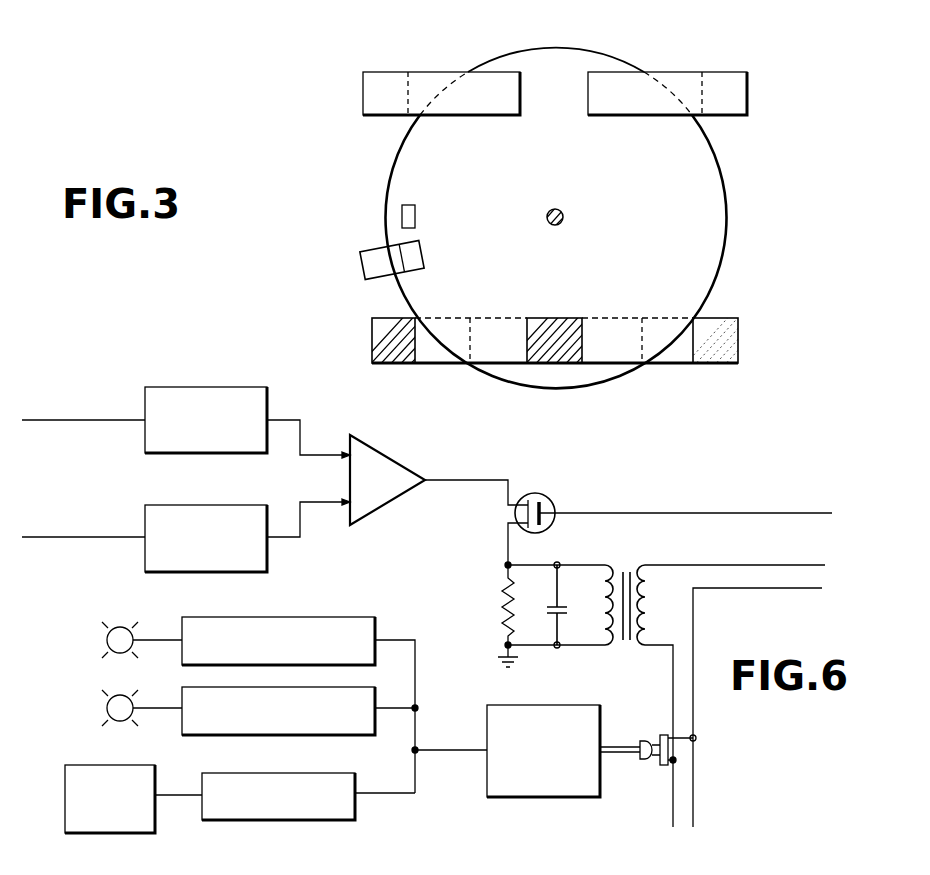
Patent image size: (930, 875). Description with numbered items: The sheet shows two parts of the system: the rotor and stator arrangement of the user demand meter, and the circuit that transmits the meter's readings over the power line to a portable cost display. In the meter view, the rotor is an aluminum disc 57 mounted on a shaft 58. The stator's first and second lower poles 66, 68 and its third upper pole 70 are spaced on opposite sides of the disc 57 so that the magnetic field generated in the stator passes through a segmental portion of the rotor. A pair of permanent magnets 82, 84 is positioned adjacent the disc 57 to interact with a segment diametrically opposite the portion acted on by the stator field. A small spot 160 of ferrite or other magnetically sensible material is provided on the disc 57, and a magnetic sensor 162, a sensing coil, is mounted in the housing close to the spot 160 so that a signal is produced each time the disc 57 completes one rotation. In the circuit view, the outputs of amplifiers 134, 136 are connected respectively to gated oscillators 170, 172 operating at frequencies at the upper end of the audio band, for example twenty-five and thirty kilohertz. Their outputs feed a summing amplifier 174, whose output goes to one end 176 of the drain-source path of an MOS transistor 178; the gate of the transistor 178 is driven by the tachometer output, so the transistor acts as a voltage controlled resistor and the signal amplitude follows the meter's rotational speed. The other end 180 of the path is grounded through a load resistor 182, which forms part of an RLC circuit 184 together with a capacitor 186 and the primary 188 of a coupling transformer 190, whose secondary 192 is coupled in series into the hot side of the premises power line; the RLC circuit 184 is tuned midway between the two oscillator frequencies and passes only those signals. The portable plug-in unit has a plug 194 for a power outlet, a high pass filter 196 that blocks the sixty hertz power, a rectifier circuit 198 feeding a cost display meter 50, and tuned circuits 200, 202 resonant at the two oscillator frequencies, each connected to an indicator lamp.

In FIG. 3, the aluminum disc 57 is at (531, 56).
In FIG. 3, the permanent magnet 82 is at (363, 74).
In FIG. 3, the permanent magnet 84 is at (748, 90).
In FIG. 3, the shaft 58 is at (548, 213).
In FIG. 3, the magnetically sensible spot 160 is at (405, 205).
In FIG. 3, the magnetic sensor 162 is at (362, 258).
In FIG. 3, the third upper pole 70 is at (552, 320).
In FIG. 3, the first lower pole 66 is at (493, 343).
In FIG. 3, the second lower pole 68 is at (615, 343).
In FIG. 6, the amplifier 134 is at (83, 386).
In FIG. 6, the amplifier 136 is at (83, 497).
In FIG. 6, the gated oscillator 170 is at (268, 374).
In FIG. 6, the gated oscillator 172 is at (238, 505).
In FIG. 6, the summing amplifier 174 is at (401, 466).
In FIG. 6, the end of drain-source signal path 176 is at (509, 480).
In FIG. 6, the MOS transistor 178 is at (553, 502).
In FIG. 6, the other end of source-drain signal path 180 is at (508, 543).
In FIG. 6, the load resistor 182 is at (505, 606).
In FIG. 6, the RLC circuit 184 is at (563, 648).
In FIG. 6, the capacitor 186 is at (563, 607).
In FIG. 6, the primary 188 is at (607, 600).
In FIG. 6, the coupling transformer 190 is at (622, 645).
In FIG. 6, the secondary 192 is at (648, 611).
In FIG. 6, the plug 194 is at (645, 740).
In FIG. 6, the high pass filter 196 is at (487, 735).
In FIG. 6, the rectifier circuit 198 is at (355, 777).
In FIG. 6, the tuned circuit 200 is at (343, 617).
In FIG. 6, the tuned circuit 202 is at (356, 688).
In FIG. 6, the cost display meter 50 is at (156, 785).